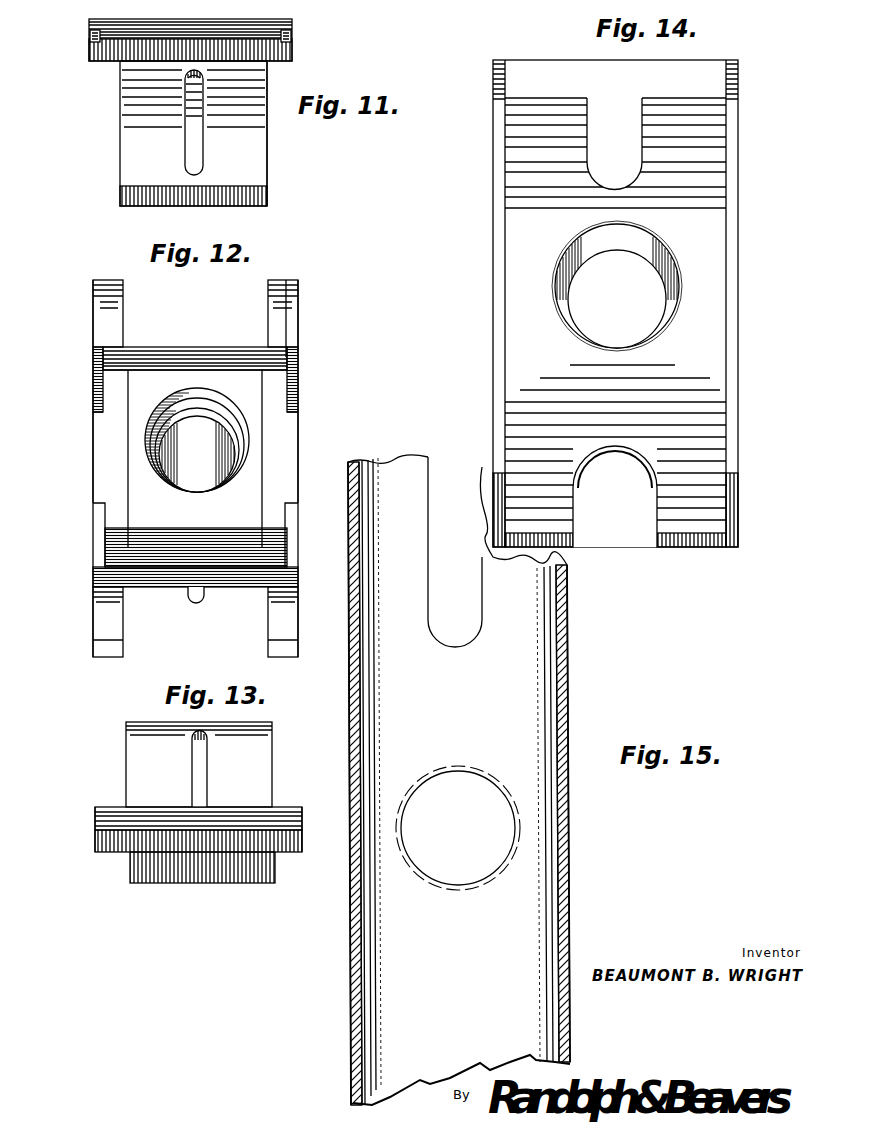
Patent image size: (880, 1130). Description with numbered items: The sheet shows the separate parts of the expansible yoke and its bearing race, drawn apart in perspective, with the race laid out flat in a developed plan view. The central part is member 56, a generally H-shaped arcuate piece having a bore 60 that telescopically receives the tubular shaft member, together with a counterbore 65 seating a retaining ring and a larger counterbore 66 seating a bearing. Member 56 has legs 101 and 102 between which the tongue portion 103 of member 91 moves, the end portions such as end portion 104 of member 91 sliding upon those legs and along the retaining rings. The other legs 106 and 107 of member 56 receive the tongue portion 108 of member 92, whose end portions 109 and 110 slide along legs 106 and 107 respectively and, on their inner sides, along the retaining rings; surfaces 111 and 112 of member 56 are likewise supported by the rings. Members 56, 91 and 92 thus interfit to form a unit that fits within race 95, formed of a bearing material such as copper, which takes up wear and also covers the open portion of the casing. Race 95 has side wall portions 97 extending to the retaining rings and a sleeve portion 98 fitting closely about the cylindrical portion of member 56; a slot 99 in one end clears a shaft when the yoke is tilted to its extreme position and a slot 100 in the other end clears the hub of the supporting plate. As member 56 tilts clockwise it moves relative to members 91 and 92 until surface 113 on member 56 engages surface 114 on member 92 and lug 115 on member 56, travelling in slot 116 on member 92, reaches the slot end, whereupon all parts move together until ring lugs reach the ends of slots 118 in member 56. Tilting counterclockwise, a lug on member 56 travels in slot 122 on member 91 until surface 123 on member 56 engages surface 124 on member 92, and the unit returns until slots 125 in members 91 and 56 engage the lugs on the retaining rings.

In FIG. 12, the member of the expansible yoke 56 is at (306, 442).
In FIG. 12, the bore 60 is at (172, 487).
In FIG. 12, the counterbore 65 is at (223, 412).
In FIG. 12, the counterbore 66 is at (167, 403).
In FIG. 11, the arcuate member 91 is at (274, 168).
In FIG. 13, the arcuate member 92 is at (120, 753).
In FIG. 14, the race 95 is at (746, 316).
In FIG. 15, the race 95 is at (575, 723).
In FIG. 14, the side wall portions 97 is at (505, 249).
In FIG. 15, the side wall portions 97 is at (355, 747).
In FIG. 14, the sleeve portion 98 is at (617, 247).
In FIG. 15, the sleeve portion 98 is at (405, 799).
In FIG. 14, the slot 99 is at (590, 134).
In FIG. 15, the slot 99 is at (428, 564).
In FIG. 14, the slot 100 is at (575, 529).
In FIG. 15, the slot 100 is at (417, 1091).
In FIG. 12, the leg 101 is at (109, 283).
In FIG. 12, the leg 102 is at (283, 300).
In FIG. 11, the tongue portion 103 is at (128, 164).
In FIG. 11, the end portion 104 is at (99, 62).
In FIG. 12, the leg 106 is at (107, 616).
In FIG. 12, the leg 107 is at (280, 621).
In FIG. 13, the tongue portion 108 is at (248, 756).
In FIG. 13, the end portion 109 is at (107, 807).
In FIG. 13, the end portion 110 is at (287, 807).
In FIG. 12, the surface 111 is at (99, 457).
In FIG. 12, the surface 112 is at (278, 488).
In FIG. 12, the surface 113 is at (208, 348).
In FIG. 11, the surface 114 is at (175, 57).
In FIG. 12, the lug 115 is at (196, 600).
In FIG. 13, the slot 116 is at (198, 776).
In FIG. 12, the slots 118 is at (100, 372).
In FIG. 11, the slot 122 is at (196, 156).
In FIG. 12, the surface 123 is at (167, 578).
In FIG. 13, the surface 124 is at (232, 807).
In FIG. 11, the slots 125 is at (90, 40).
In FIG. 12, the slots 125 is at (99, 537).